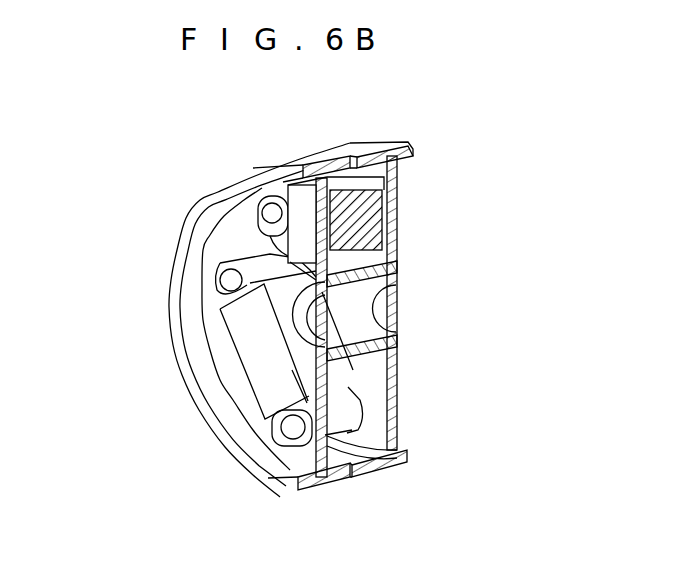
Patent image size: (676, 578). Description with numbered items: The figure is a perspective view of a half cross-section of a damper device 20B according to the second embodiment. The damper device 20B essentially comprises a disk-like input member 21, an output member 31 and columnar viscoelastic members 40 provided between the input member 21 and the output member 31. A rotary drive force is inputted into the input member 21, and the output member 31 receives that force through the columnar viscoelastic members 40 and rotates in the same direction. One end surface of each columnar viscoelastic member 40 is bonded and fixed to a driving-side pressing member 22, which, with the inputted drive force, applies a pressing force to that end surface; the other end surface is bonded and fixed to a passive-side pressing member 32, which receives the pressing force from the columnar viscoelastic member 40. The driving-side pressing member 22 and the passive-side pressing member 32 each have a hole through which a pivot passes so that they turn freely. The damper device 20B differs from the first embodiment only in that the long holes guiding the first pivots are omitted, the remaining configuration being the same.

The damper device 20B is at (547, 114).
The input member 21 is at (390, 142).
The driving-side pressing member 22 is at (277, 190).
The output member 31 is at (186, 219).
The passive-side pressing member 32 is at (217, 296).
The columnar viscoelastic member 40 is at (382, 222).